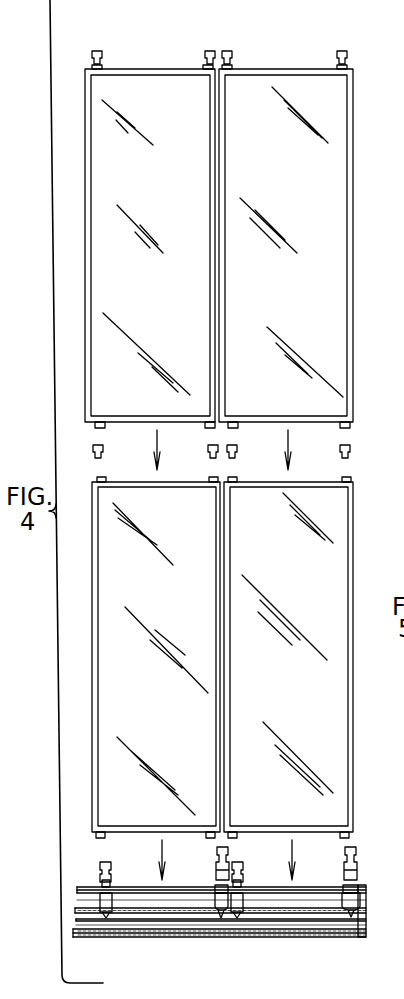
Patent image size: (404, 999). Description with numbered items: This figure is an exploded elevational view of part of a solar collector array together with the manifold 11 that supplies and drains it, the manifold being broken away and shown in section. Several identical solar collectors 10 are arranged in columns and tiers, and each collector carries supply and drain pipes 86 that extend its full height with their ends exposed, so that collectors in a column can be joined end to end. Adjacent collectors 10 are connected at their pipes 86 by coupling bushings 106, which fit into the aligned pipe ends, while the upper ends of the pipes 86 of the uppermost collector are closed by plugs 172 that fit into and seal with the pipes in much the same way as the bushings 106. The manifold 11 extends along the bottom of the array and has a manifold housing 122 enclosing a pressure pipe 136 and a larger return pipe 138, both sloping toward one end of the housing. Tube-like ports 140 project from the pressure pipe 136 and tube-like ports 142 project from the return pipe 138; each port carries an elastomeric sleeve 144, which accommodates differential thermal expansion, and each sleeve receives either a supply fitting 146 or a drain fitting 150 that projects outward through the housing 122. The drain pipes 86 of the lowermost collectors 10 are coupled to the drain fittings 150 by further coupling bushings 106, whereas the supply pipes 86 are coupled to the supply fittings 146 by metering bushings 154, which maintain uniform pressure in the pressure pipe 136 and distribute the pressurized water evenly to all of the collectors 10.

The solar collector 10 is at (164, 195).
The manifold 11 is at (369, 974).
The supply and drain pipes 86 is at (206, 66).
The coupling bushing 106 is at (104, 450).
The manifold housing 122 is at (315, 938).
The pressure pipe 136 is at (293, 921).
The return pipe 138 is at (168, 930).
The port 140 is at (218, 915).
The port 142 is at (105, 918).
The elastomeric sleeve 144 is at (111, 900).
The supply fitting 146 is at (216, 888).
The drain fitting 150 is at (111, 886).
The metering bushing 154 is at (216, 855).
The plug 172 is at (97, 50).